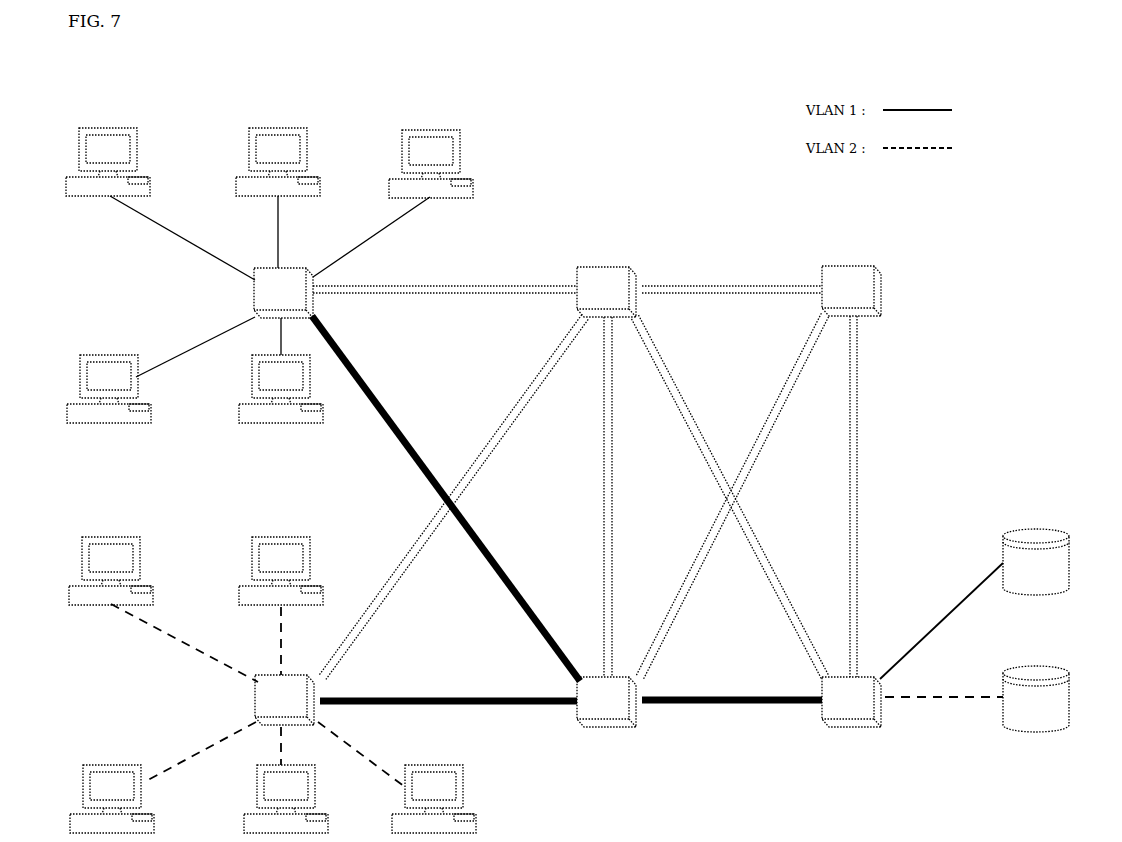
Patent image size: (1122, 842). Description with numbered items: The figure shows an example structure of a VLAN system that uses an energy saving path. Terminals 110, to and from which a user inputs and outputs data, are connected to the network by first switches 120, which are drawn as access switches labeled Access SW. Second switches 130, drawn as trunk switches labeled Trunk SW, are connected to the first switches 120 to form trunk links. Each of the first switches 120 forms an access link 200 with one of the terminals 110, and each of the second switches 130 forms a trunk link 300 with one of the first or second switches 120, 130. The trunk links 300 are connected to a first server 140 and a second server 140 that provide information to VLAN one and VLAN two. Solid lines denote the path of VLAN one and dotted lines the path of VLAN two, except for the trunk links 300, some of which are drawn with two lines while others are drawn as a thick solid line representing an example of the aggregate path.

The terminal 110 is at (131, 116).
The first switch 120 is at (313, 262).
The second switch 130 is at (624, 262).
The server 140 is at (1053, 528).
The access link 200 is at (195, 237).
The trunk link 300 is at (494, 283).